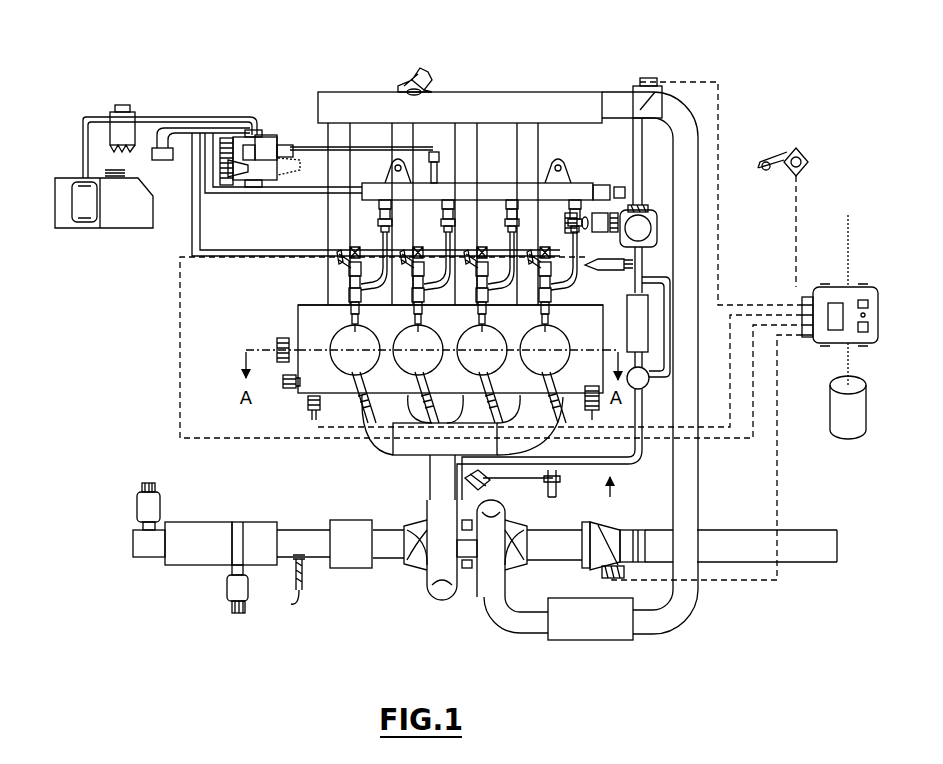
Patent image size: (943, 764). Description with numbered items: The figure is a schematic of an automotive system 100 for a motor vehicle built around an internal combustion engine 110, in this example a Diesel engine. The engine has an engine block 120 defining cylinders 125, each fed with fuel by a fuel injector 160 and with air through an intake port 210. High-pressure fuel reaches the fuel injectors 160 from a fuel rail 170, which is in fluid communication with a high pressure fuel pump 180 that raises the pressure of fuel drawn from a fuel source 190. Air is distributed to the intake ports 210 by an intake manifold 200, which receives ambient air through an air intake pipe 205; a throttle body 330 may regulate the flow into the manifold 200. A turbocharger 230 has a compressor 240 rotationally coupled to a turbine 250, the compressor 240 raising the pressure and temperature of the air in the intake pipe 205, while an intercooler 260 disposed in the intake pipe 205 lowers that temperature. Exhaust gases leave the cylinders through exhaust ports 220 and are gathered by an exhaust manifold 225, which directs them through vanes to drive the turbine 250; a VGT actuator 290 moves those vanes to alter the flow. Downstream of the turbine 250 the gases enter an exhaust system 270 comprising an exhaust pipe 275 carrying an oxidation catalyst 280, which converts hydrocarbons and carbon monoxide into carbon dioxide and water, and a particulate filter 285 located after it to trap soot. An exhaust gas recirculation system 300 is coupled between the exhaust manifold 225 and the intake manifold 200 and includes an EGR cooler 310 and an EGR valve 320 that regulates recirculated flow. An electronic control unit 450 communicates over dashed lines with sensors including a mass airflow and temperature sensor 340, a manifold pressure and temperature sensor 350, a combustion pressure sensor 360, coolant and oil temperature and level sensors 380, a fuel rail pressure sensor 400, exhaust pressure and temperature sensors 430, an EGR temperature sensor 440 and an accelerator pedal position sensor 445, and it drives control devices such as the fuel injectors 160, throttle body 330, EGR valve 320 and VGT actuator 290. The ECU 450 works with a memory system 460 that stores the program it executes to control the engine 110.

The automotive system 100 is at (236, 78).
The internal combustion engine 110 is at (552, 83).
The engine block 120 is at (297, 310).
The cylinder 125 is at (562, 336).
The fuel injector 160 is at (345, 290).
The fuel rail 170 is at (383, 195).
The high pressure fuel pump 180 is at (272, 133).
The fuel source 190 is at (127, 215).
The intake manifold 200 is at (468, 110).
The air intake pipe 205 is at (690, 503).
The intake port 210 is at (327, 306).
The exhaust port 220 is at (350, 398).
The exhaust manifold 225 is at (418, 447).
The turbocharger 230 is at (436, 606).
The compressor 240 is at (492, 570).
The turbine 250 is at (440, 567).
The intercooler 260 is at (612, 627).
The exhaust system 270 is at (205, 512).
The exhaust pipe 275 is at (147, 545).
The oxidation catalyst 280 is at (258, 532).
The particulate filter 285 is at (192, 547).
The VGT actuator 290 is at (483, 483).
The exhaust gas recirculation system 300 is at (600, 532).
The EGR cooler 310 is at (638, 338).
The EGR valve 320 is at (645, 207).
The throttle body 330 is at (648, 78).
The mass airflow and temperature sensor 340 is at (612, 570).
The manifold pressure and temperature sensor 350 is at (413, 82).
The combustion pressure sensor 360 is at (368, 407).
The coolant and oil temperature and level sensors 380 is at (313, 400).
The fuel rail pressure sensor 400 is at (624, 186).
The exhaust pressure and temperature sensors 430 is at (133, 497).
The EGR temperature sensor 440 is at (626, 262).
The accelerator pedal position sensor 445 is at (800, 150).
The electronic control unit 450 is at (840, 269).
The memory system 460 is at (848, 422).